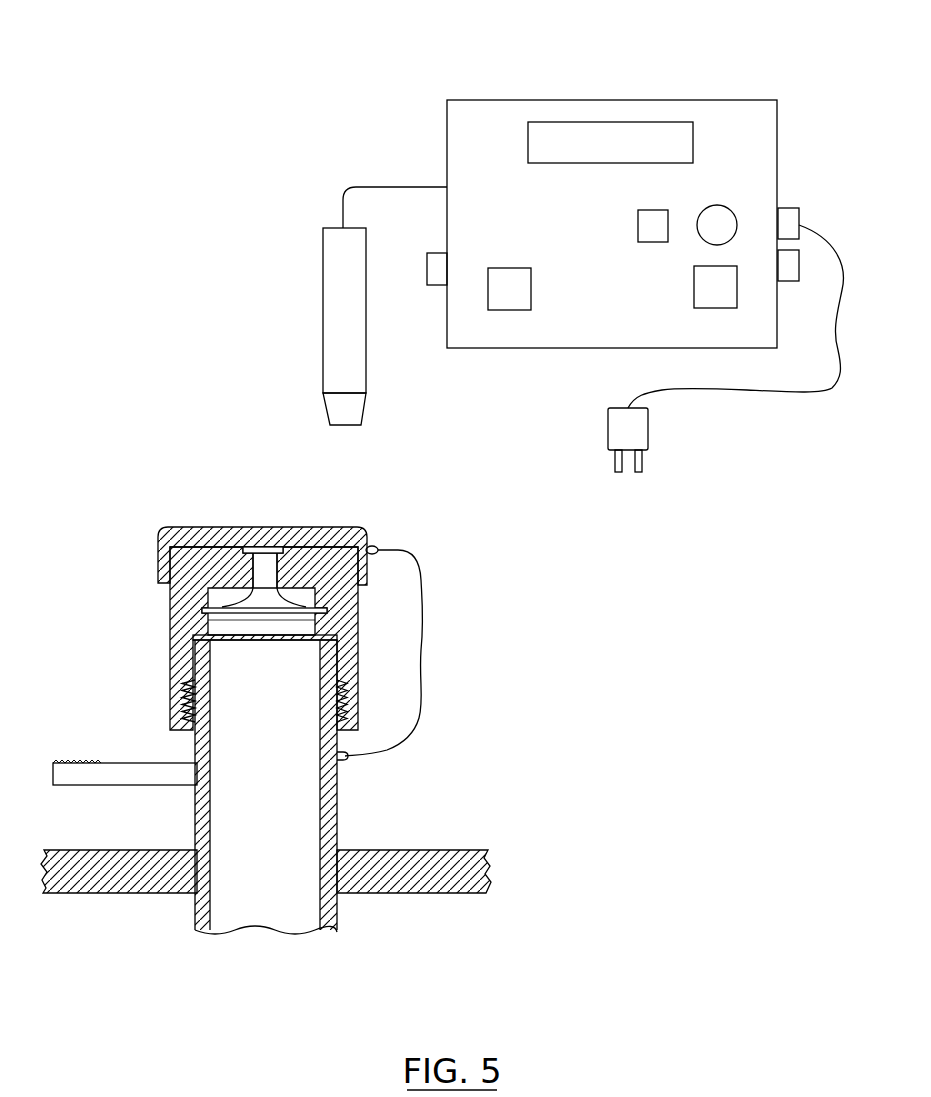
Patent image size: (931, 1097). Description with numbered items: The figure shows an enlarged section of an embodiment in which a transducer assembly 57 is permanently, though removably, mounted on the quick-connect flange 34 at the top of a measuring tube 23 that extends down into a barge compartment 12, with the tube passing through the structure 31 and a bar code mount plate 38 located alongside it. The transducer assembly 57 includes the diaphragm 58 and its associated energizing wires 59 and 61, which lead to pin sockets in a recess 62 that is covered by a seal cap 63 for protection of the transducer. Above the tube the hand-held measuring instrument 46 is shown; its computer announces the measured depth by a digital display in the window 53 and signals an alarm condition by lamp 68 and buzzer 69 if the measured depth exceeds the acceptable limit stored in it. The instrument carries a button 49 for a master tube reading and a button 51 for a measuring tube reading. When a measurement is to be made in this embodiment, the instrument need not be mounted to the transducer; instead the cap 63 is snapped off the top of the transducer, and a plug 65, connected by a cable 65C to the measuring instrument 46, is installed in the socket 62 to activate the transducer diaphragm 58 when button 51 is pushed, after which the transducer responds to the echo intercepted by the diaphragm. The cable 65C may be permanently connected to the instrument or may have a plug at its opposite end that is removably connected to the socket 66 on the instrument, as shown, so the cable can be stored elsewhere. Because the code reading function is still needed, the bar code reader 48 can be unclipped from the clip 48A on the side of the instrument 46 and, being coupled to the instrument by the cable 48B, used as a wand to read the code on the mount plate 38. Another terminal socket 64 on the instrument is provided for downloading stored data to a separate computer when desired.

The compartment 12 is at (100, 943).
The measuring tube 23 is at (333, 910).
The wall 31 is at (463, 872).
The quick-connect flange 34 is at (345, 697).
The bar code mount plate 38 is at (137, 763).
The measuring instrument 46 is at (503, 82).
The bar code reader 48 is at (337, 320).
The clip 48A is at (433, 277).
The cable 48B is at (345, 190).
The button 49 is at (508, 295).
The button 51 is at (707, 282).
The window 53 is at (553, 143).
The transducer assembly 57 is at (175, 608).
The diaphragm 58 is at (218, 613).
The energizing wire 59 is at (255, 600).
The energizing wire 61 is at (283, 600).
The recess 62 is at (265, 550).
The seal cap 63 is at (198, 530).
The terminal socket 64 is at (788, 272).
The plug 65 is at (637, 430).
The cable 65C is at (748, 390).
The socket 66 is at (787, 222).
The lamp 68 is at (713, 215).
The buzzer 69 is at (652, 222).